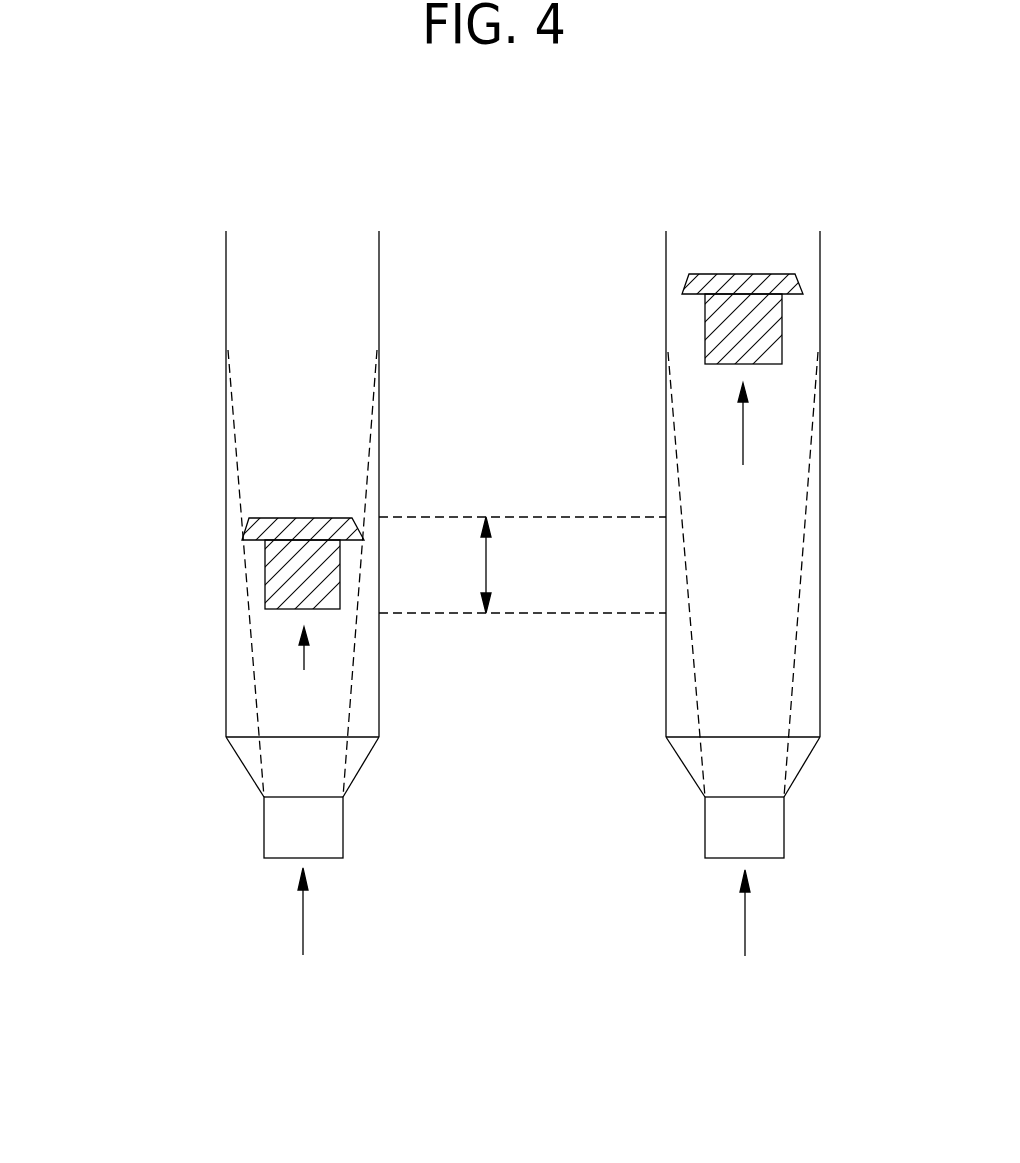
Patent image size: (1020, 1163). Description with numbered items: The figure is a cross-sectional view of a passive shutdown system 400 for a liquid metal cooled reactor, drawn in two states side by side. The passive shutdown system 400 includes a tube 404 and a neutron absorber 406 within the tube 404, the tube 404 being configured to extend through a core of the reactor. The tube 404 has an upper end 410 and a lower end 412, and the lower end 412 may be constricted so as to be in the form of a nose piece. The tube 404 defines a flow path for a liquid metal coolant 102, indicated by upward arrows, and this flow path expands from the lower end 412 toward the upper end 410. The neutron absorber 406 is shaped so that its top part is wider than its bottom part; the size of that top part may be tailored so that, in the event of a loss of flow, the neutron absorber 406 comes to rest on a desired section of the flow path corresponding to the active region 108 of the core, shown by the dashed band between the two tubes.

The passive shutdown system 400 is at (506, 118).
The upper end 410 is at (185, 236).
The tube 404 is at (226, 400).
The neutron absorber 406 is at (289, 567).
The lower end 412 is at (228, 831).
The liquid metal coolant 102 is at (302, 927).
The active region 108 is at (543, 584).